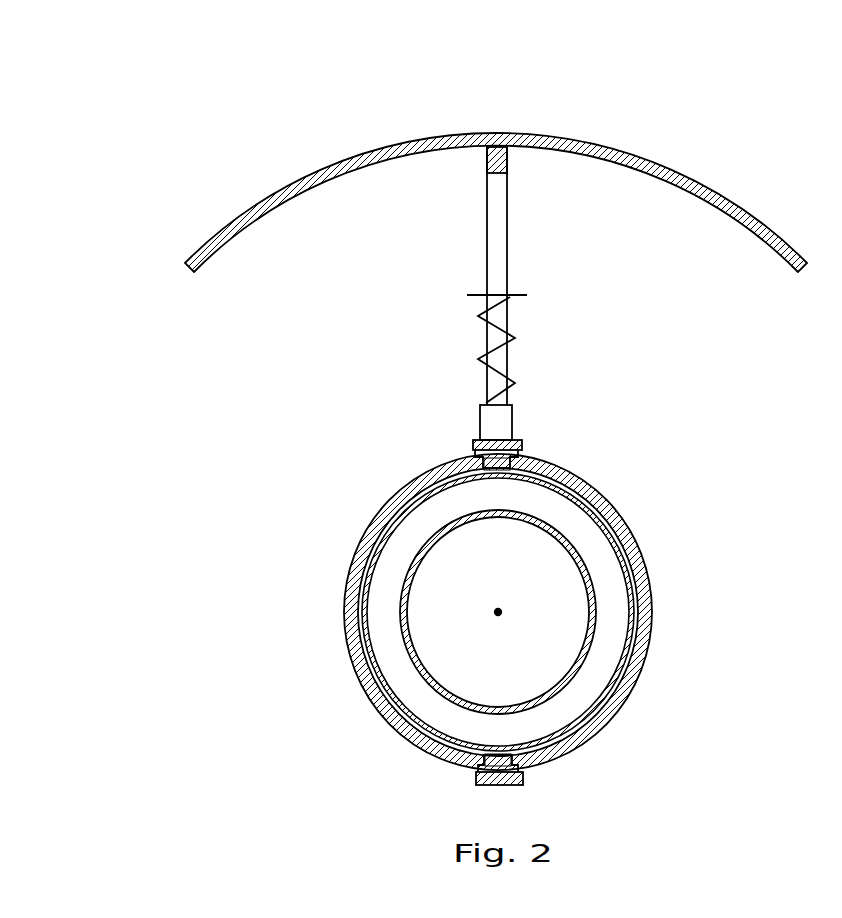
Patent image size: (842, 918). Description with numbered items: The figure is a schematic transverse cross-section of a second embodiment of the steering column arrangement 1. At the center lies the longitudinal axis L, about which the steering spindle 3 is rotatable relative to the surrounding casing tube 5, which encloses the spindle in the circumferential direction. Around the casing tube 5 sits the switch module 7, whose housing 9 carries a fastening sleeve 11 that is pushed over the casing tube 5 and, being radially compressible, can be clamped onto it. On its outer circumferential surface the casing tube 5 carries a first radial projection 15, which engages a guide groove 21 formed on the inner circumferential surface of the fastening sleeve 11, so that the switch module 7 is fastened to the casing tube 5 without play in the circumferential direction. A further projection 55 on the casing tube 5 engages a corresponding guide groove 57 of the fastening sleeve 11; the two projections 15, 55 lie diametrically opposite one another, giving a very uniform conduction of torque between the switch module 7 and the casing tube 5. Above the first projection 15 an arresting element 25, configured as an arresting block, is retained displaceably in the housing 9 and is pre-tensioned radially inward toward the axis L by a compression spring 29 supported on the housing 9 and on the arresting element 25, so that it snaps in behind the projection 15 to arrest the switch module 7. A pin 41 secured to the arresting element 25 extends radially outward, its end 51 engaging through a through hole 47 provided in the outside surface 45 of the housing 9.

The steering column arrangement 1 is at (652, 111).
The steering spindle 3 is at (597, 633).
The casing tube 5 is at (613, 520).
The switch module 7 is at (180, 173).
The housing 9 is at (769, 216).
The fastening sleeve 11 is at (588, 482).
The first radial projection 15 is at (518, 462).
The guide groove 21 is at (473, 442).
The arresting element 25 is at (508, 413).
The compression spring 29 is at (510, 330).
The pin 41 is at (537, 276).
The outside surface 45 is at (473, 131).
The through hole 47 is at (497, 133).
The end of the pin 51 is at (505, 158).
The further projection 55 is at (525, 772).
The guide groove 57 is at (477, 773).
The longitudinal axis L is at (498, 612).